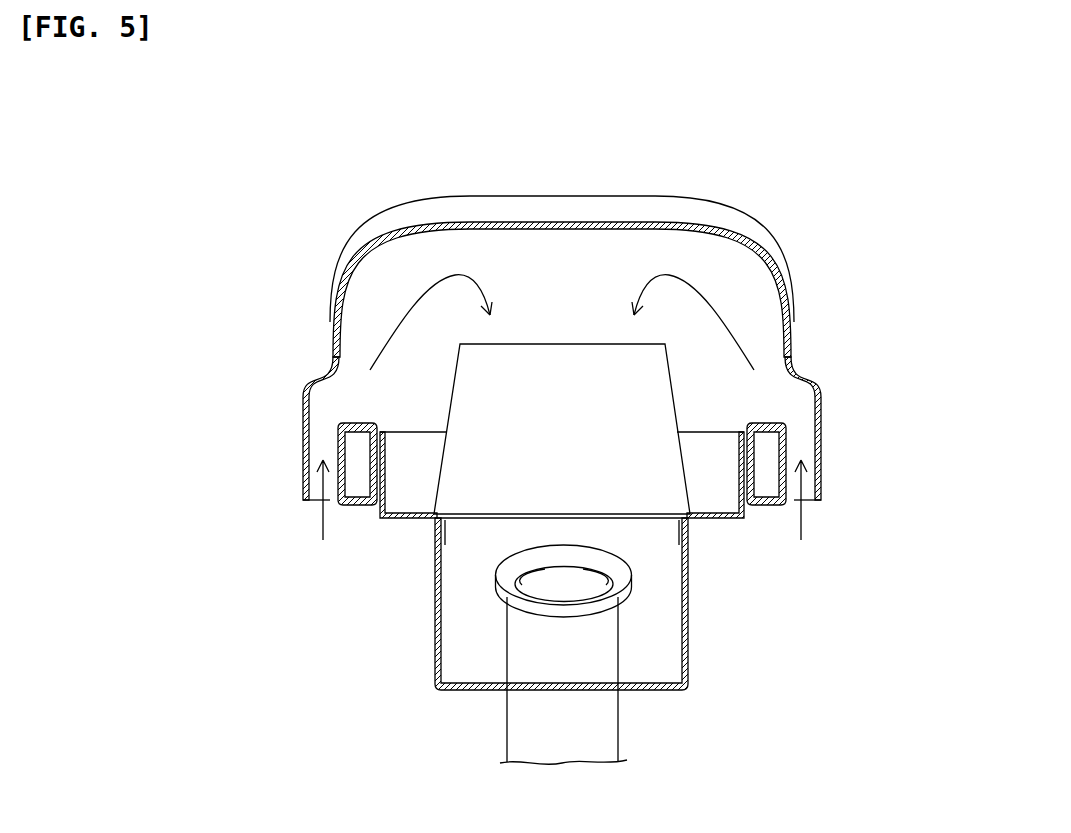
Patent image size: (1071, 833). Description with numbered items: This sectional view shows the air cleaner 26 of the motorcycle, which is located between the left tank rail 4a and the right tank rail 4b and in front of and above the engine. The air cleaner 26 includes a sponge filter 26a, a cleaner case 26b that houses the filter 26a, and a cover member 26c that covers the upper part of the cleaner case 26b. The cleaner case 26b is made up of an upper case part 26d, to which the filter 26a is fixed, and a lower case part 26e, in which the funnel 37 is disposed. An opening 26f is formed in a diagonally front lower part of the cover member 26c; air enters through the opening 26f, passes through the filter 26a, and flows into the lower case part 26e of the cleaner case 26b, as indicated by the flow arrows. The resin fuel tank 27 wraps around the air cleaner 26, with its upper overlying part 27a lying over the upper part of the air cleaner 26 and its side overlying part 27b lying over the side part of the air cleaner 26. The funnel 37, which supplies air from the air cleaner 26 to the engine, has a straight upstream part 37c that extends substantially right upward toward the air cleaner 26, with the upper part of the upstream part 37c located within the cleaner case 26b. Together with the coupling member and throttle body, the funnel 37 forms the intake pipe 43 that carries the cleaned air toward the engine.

The air cleaner 26 is at (803, 202).
The sponge filter 26a is at (638, 427).
The cleaner case 26b is at (828, 613).
The cover member 26c is at (792, 347).
The upper case part 26d is at (713, 517).
The lower case part 26e is at (688, 657).
The opening 26f is at (315, 500).
The fuel tank 27 is at (563, 197).
The upper overlying part 27a is at (485, 203).
The side overlying part 27b is at (345, 263).
The left tank rail 4a is at (760, 507).
The right tank rail 4b is at (352, 507).
The funnel 37 is at (602, 718).
The upstream part 37c is at (518, 733).
The intake pipe 43 is at (655, 742).